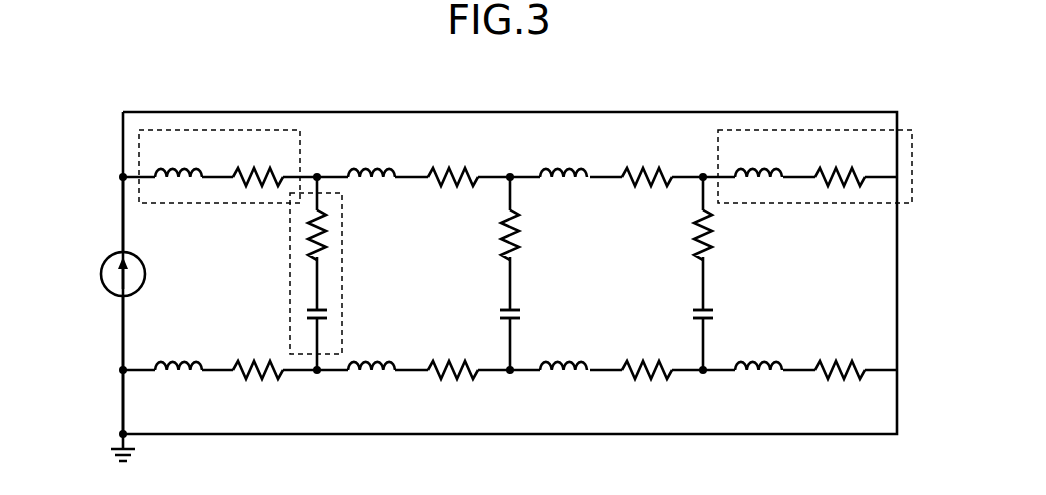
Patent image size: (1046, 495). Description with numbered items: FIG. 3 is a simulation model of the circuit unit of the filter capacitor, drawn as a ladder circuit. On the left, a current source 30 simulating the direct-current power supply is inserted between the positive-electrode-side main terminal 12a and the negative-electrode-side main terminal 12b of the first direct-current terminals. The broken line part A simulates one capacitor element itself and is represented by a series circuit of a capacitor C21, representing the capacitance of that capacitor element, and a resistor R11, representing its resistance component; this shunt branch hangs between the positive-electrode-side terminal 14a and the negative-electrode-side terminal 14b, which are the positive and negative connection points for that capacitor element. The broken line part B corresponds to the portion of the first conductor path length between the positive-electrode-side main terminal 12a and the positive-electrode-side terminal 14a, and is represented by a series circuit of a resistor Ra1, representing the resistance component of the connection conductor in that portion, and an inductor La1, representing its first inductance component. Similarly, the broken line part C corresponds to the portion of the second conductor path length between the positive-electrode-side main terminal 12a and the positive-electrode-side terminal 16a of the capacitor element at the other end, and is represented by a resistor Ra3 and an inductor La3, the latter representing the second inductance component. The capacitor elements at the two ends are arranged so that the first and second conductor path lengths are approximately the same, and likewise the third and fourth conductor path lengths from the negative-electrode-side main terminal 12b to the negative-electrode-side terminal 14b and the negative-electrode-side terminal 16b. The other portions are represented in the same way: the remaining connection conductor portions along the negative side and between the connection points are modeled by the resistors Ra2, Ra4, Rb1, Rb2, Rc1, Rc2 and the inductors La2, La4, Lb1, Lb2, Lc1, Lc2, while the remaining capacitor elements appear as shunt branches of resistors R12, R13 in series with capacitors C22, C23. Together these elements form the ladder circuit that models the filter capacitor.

The positive-electrode-side main terminal 12a is at (123, 177).
The negative-electrode-side main terminal 12b is at (123, 370).
The positive-electrode-side terminal 14a is at (317, 177).
The negative-electrode-side terminal 14b is at (317, 370).
The positive-electrode-side terminal 16a is at (703, 177).
The negative-electrode-side terminal 16b is at (703, 370).
The current source 30 is at (119, 254).
The broken line part A is at (290, 278).
The broken line part B is at (163, 130).
The broken line part C is at (906, 130).
The inductor La1 is at (178, 161).
The resistor Ra1 is at (258, 165).
The inductor La2 is at (178, 383).
The resistor Ra2 is at (258, 383).
The inductor La3 is at (758, 161).
The resistor Ra3 is at (840, 165).
The inductor La4 is at (758, 383).
The resistor Ra4 is at (840, 383).
The inductor Lb1 is at (371, 161).
The resistor Rb1 is at (453, 165).
The inductor Lb2 is at (371, 383).
The resistor Rb2 is at (453, 383).
The inductor Lc1 is at (563, 161).
The resistor Rc1 is at (647, 165).
The inductor Lc2 is at (563, 383).
The resistor Rc2 is at (647, 383).
The resistor R11 is at (294, 235).
The resistor R12 is at (487, 235).
The resistor R13 is at (680, 235).
The capacitor C21 is at (295, 315).
The shunt capacitor C22 is at (488, 315).
The shunt capacitor C23 is at (681, 315).